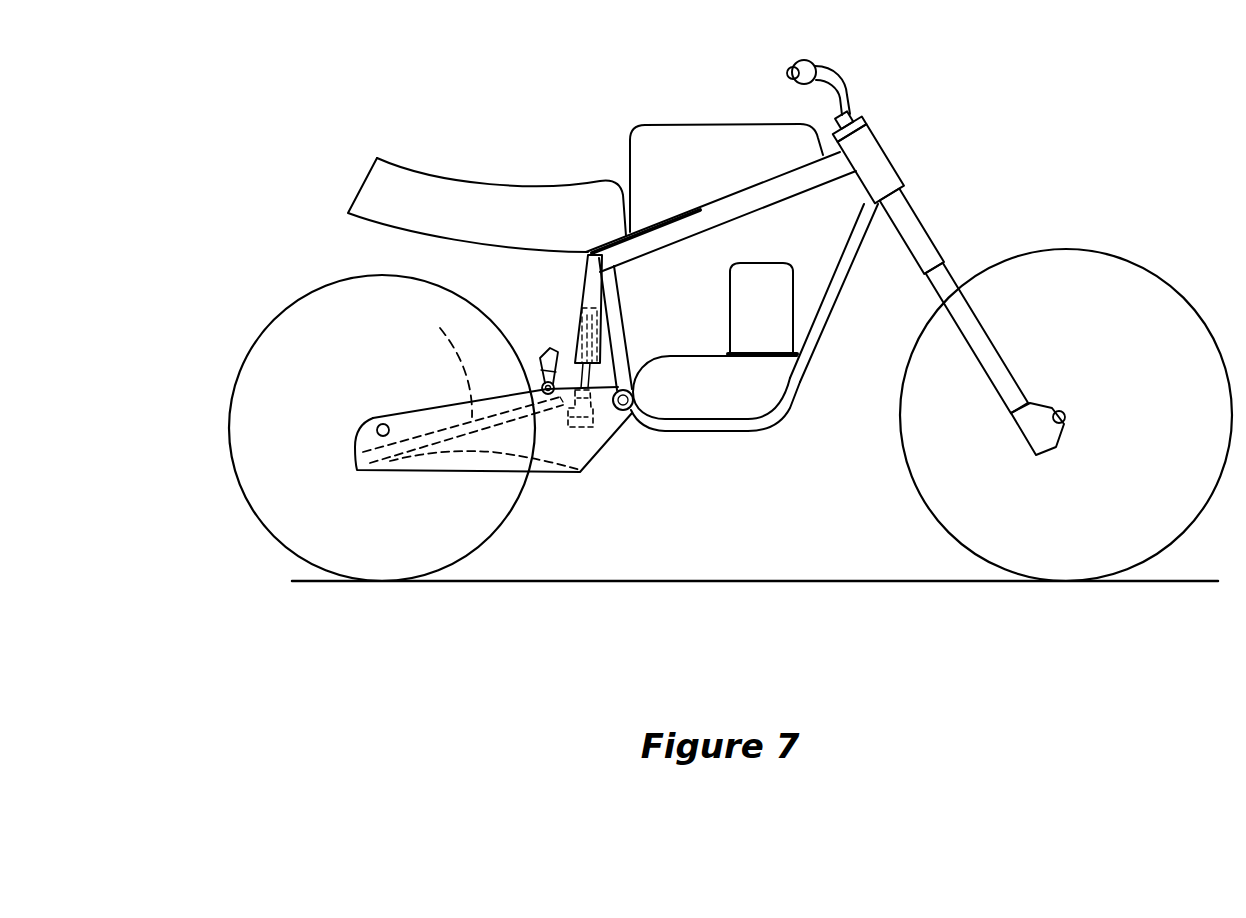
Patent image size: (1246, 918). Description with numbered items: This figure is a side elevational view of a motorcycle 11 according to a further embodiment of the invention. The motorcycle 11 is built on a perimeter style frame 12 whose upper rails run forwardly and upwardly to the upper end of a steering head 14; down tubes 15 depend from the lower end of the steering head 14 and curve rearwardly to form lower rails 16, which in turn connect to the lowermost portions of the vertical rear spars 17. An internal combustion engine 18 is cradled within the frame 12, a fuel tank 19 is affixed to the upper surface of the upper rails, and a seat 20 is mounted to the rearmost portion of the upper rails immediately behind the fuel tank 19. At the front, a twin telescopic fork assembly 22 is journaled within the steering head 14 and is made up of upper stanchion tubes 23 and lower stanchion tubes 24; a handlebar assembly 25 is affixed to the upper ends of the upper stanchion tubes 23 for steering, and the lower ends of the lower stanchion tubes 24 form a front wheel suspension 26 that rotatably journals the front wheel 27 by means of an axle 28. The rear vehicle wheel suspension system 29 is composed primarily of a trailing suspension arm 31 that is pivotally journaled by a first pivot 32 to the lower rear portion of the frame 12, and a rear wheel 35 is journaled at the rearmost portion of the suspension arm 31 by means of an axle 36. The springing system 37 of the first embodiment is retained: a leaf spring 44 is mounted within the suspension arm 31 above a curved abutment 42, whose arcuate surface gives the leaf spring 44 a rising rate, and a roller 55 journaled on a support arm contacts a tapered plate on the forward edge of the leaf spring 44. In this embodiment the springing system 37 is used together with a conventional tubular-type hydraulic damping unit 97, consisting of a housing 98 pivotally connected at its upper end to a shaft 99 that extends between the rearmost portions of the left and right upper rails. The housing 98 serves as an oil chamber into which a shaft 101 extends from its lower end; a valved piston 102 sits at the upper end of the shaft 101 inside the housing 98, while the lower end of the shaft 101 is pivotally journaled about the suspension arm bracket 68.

The motorcycle 11 is at (968, 76).
The frame 12 is at (690, 212).
The steering head 14 is at (862, 178).
The down tubes 15 is at (853, 274).
The lower rails 16 is at (737, 432).
The rear spars 17 is at (634, 327).
The internal combustion engine 18 is at (798, 292).
The fuel tank 19 is at (726, 122).
The seat 20 is at (427, 160).
The twin telescopic fork assembly 22 is at (942, 233).
The upper stanchion tubes 23 is at (916, 197).
The lower stanchion tubes 24 is at (997, 333).
The handlebar assembly 25 is at (835, 75).
The front wheel suspension 26 is at (1075, 392).
The front wheel 27 is at (1165, 280).
The axle 28 is at (1067, 416).
The rear vehicle wheel suspension system 29 is at (490, 278).
The trailing suspension arm 31 is at (389, 411).
The first pivot 32 is at (640, 398).
The rear wheel 35 is at (272, 312).
The axle 36 is at (365, 425).
The springing system 37 is at (421, 389).
The curved abutment 42 is at (492, 455).
The leaf spring 44 is at (437, 357).
The roller 55 is at (545, 382).
The bracket 68 is at (594, 417).
The hydraulic damping unit 97 is at (580, 278).
The housing 98 is at (617, 275).
The shaft 99 is at (598, 250).
The shaft 101 is at (638, 352).
The valved piston 102 is at (615, 308).